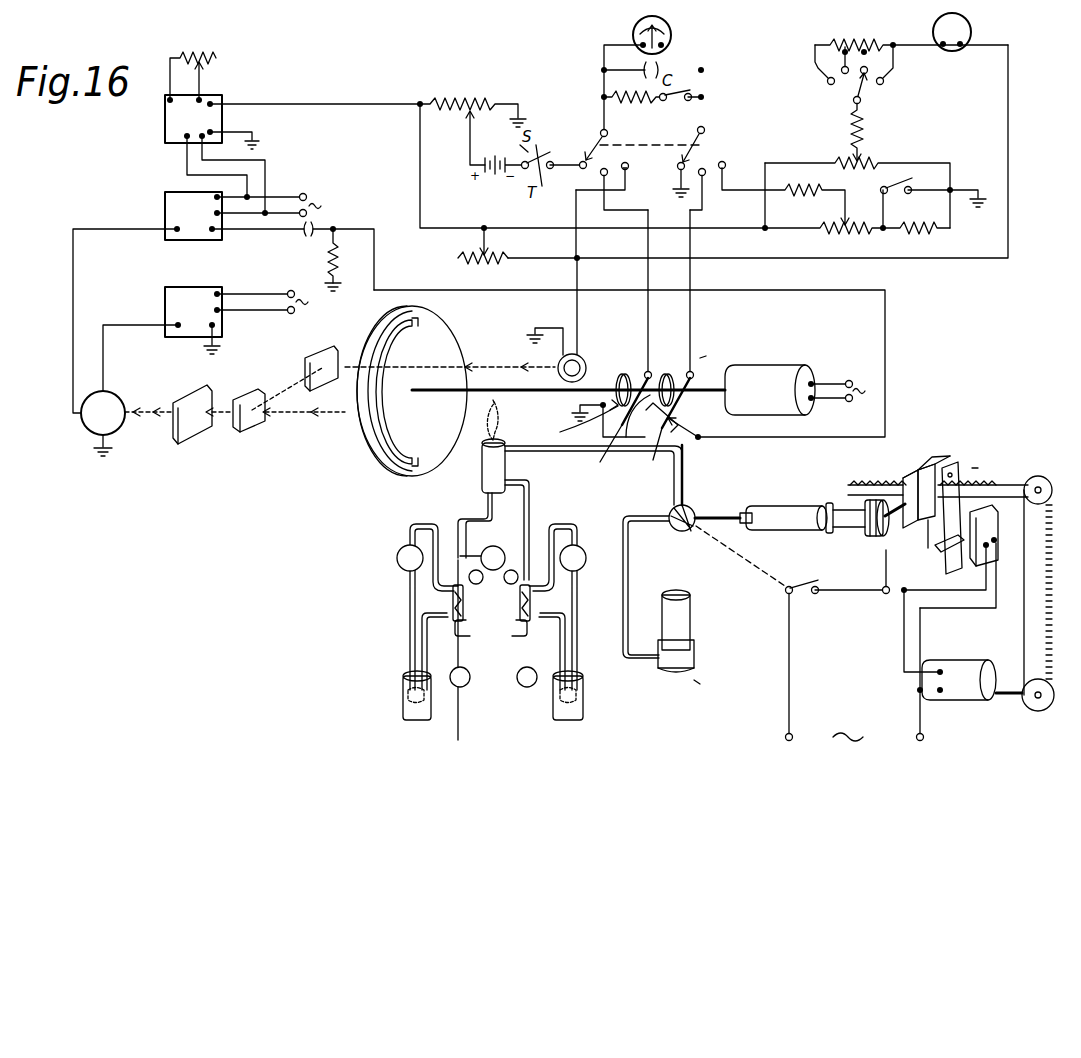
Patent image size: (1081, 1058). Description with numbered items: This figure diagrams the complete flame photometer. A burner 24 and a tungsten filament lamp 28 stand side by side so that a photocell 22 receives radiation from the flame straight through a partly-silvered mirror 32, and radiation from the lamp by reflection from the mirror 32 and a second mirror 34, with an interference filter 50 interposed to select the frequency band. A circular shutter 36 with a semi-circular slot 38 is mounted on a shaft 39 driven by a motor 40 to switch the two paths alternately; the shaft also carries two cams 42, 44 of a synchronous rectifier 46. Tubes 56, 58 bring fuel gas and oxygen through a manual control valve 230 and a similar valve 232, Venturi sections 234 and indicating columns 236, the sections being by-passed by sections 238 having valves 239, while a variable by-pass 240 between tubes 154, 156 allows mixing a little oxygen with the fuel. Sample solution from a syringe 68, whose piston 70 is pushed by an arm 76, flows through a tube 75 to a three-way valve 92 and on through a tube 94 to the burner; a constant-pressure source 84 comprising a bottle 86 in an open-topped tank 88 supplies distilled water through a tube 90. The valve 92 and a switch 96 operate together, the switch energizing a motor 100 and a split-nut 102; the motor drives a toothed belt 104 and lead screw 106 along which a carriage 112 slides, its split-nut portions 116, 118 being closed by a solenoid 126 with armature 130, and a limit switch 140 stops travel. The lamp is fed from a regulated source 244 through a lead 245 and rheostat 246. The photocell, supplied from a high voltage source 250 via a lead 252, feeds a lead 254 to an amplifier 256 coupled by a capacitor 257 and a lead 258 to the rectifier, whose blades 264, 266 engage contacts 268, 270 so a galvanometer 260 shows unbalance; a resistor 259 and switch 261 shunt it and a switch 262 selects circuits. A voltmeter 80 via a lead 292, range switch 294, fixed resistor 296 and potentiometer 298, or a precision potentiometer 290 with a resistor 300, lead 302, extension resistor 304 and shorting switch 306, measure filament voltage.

The photocell 22 is at (118, 414).
The burner 24 is at (468, 466).
The tungsten filament lamp 28 is at (567, 320).
The partly-silvered mirror 32 is at (249, 399).
The mirror 34 is at (321, 355).
The circular shutter 36 is at (419, 388).
The semi-circular slot 38 is at (401, 392).
The shaft 39 is at (505, 420).
The motor 40 is at (795, 373).
The cam 42 is at (620, 375).
The cam 44 is at (664, 375).
The synchronous rectifier 46 is at (713, 340).
The interference filter 50 is at (192, 403).
The tube 56 is at (430, 711).
The tube 58 is at (556, 708).
The syringe 68 is at (805, 502).
The piston 70 is at (859, 528).
The tube 75 is at (723, 502).
The arm 76 is at (896, 528).
The voltmeter 80 is at (969, 32).
The constant-pressure source 84 is at (706, 714).
The bottle 86 is at (693, 620).
The open-topped tank 88 is at (692, 656).
The tube 90 is at (646, 587).
The three-way valve 92 is at (675, 505).
The tube 94 is at (593, 475).
The switch 96 is at (808, 580).
The motor 100 is at (988, 671).
The split-nut 102 is at (993, 448).
The toothed belt 104 is at (1052, 470).
The lead screw 106 is at (938, 472).
The carriage 112 is at (922, 472).
The split-nut portion 116 is at (885, 491).
The split-nut portion 118 is at (958, 498).
The solenoid 126 is at (964, 548).
The armature 130 is at (937, 548).
The limit switch 140 is at (870, 565).
The tube 154 is at (539, 528).
The tube 156 is at (455, 525).
The manual control valve 230 is at (493, 671).
The valve 232 is at (489, 650).
The Venturi section 234 is at (451, 611).
The indicating column 236 is at (487, 607).
The by-pass section 238 is at (491, 640).
The valve 239 is at (493, 591).
The variable by-pass 240 is at (489, 544).
The source of regulated D.C. voltage 244 is at (216, 97).
The lead 245 is at (473, 131).
The rheostat 246 is at (460, 252).
The high voltage source 250 is at (170, 312).
The lead 252 is at (140, 358).
The lead 254 is at (125, 321).
The amplifier 256 is at (168, 211).
The capacitor 257 is at (293, 256).
The lead 258 is at (629, 363).
The resistor 259 is at (611, 142).
The galvanometer 260 is at (674, 35).
The switch 261 is at (682, 126).
The two pole triple throw switch 262 is at (632, 109).
The switch blade 264 is at (604, 452).
The switch blade 266 is at (675, 393).
The contact 268 is at (637, 418).
The contact 270 is at (664, 429).
The precision potentiometer 290 is at (824, 238).
The lead 292 is at (972, 78).
The variable resistance range switch 294 is at (861, 72).
The fixed resistor 296 is at (879, 132).
The potentiometer 298 is at (857, 181).
The resistor 300 is at (785, 196).
The lead 302 is at (639, 186).
The fixed extension resistor 304 is at (924, 238).
The shorting switch 306 is at (934, 203).